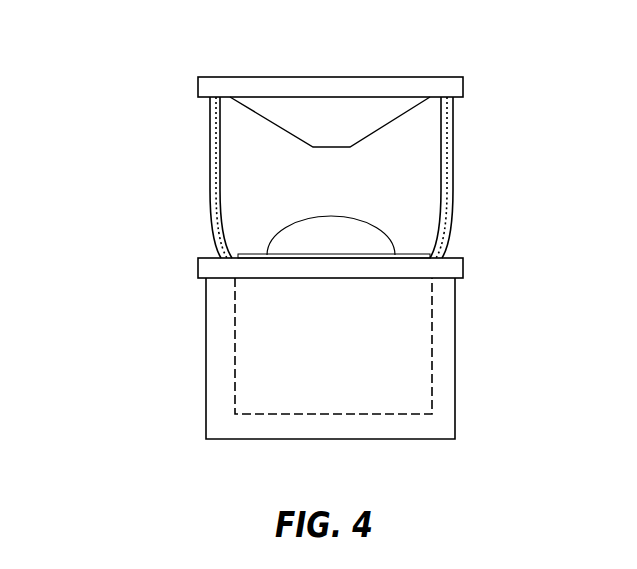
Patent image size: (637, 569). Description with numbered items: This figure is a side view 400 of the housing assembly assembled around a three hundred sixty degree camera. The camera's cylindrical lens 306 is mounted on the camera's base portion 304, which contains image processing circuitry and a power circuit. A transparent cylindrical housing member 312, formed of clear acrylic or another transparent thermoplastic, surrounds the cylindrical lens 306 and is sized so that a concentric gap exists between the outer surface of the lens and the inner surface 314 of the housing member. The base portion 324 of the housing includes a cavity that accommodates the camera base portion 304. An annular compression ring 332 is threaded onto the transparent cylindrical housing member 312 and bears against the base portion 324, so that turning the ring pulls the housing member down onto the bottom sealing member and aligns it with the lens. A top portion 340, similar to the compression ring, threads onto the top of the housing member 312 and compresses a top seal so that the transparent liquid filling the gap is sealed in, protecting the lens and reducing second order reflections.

The side view 400 is at (62, 51).
The top portion 340 is at (463, 84).
The transparent cylindrical housing member 312 is at (453, 184).
The cylindrical lens 306 is at (442, 123).
The inner surface 314 is at (209, 131).
The annular compression ring 332 is at (463, 270).
The base portion 324 is at (455, 405).
The base portion 304 is at (431, 347).